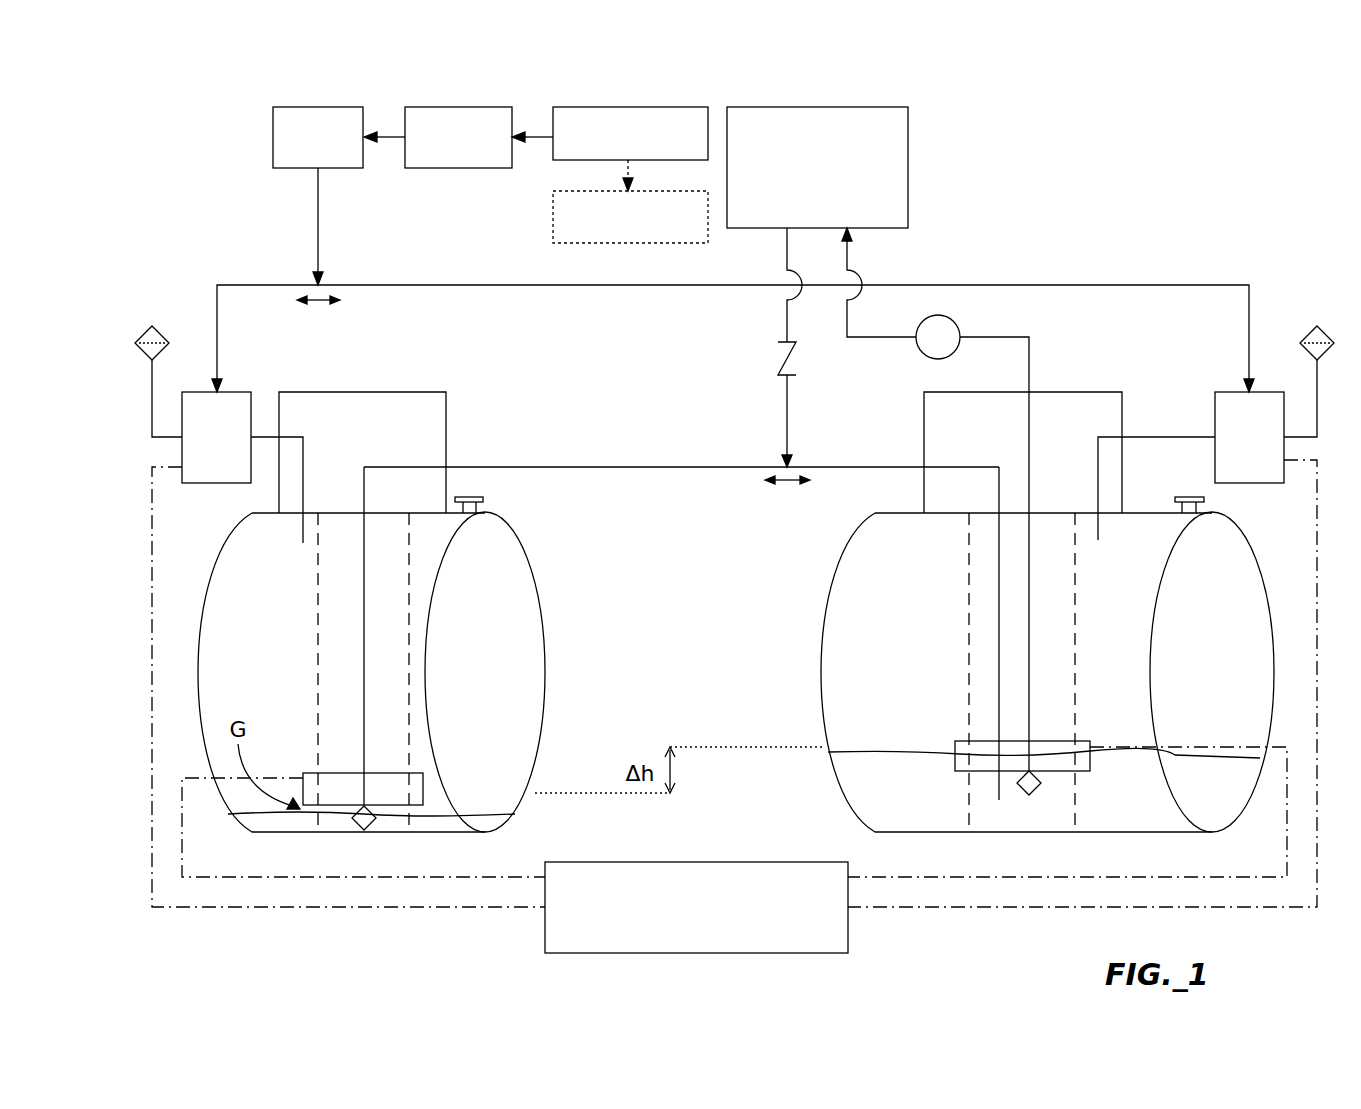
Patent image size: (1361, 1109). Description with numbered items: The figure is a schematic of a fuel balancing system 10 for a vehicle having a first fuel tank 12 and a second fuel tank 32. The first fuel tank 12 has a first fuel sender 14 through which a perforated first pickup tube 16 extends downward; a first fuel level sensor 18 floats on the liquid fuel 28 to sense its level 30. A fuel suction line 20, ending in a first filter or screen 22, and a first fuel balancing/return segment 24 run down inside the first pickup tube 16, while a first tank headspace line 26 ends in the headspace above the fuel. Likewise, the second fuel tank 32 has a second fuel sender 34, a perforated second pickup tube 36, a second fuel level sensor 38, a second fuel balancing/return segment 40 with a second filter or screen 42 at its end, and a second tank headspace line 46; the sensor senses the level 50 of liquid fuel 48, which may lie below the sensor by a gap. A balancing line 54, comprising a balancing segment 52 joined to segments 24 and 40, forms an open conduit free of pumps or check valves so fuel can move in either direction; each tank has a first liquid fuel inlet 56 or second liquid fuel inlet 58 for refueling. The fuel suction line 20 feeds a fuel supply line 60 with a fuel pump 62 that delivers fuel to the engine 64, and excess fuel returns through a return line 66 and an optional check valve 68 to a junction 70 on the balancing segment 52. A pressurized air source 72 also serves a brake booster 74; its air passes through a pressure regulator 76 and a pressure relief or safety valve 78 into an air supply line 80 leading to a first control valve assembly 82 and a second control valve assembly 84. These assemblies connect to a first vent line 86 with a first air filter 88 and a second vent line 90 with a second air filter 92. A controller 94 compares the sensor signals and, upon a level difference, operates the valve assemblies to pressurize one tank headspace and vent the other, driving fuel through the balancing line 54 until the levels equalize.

The fuel balancing system 10 is at (1208, 204).
The first fuel tank 12 is at (821, 608).
The first fuel sender 14 is at (1048, 392).
The first pickup tube 16 is at (1076, 645).
The first fuel level sensor 18 is at (955, 740).
The fuel suction line 20 is at (1029, 550).
The first filter or screen 22 is at (1034, 792).
The first fuel balancing/return segment 24 is at (999, 603).
The first tank headspace line 26 is at (1099, 528).
The liquid fuel 28 is at (1130, 798).
The level 30 is at (878, 752).
The second fuel tank 32 is at (542, 614).
The second fuel sender 34 is at (370, 392).
The second pickup tube 36 is at (410, 709).
The second fuel level sensor 38 is at (303, 775).
The second fuel balancing/return segment 40 is at (362, 604).
The second filter or screen 42 is at (357, 829).
The second tank headspace line 46 is at (302, 527).
The liquid fuel 48 is at (264, 823).
The level 50 is at (483, 812).
The balancing segment 52 is at (588, 467).
The balancing line 54 is at (511, 438).
The first liquid fuel inlet 56 is at (1187, 497).
The second liquid fuel inlet 58 is at (481, 498).
The fuel supply line 60 is at (851, 261).
The fuel pump 62 is at (918, 352).
The engine 64 is at (818, 107).
The return line 66 is at (783, 253).
The check valve 68 is at (778, 378).
The junction 70 is at (792, 464).
The pressurized air source 72 is at (630, 107).
The brake booster 74 is at (553, 222).
The pressure regulator 76 is at (465, 107).
The pressure relief or safety valve 78 is at (316, 106).
The air supply line 80 is at (467, 287).
The first control valve assembly 82 is at (1217, 396).
The second control valve assembly 84 is at (250, 391).
The first vent line 86 is at (1316, 400).
The first air filter 88 is at (1312, 330).
The second vent line 90 is at (154, 389).
The second air filter 92 is at (156, 332).
The controller 94 is at (760, 862).